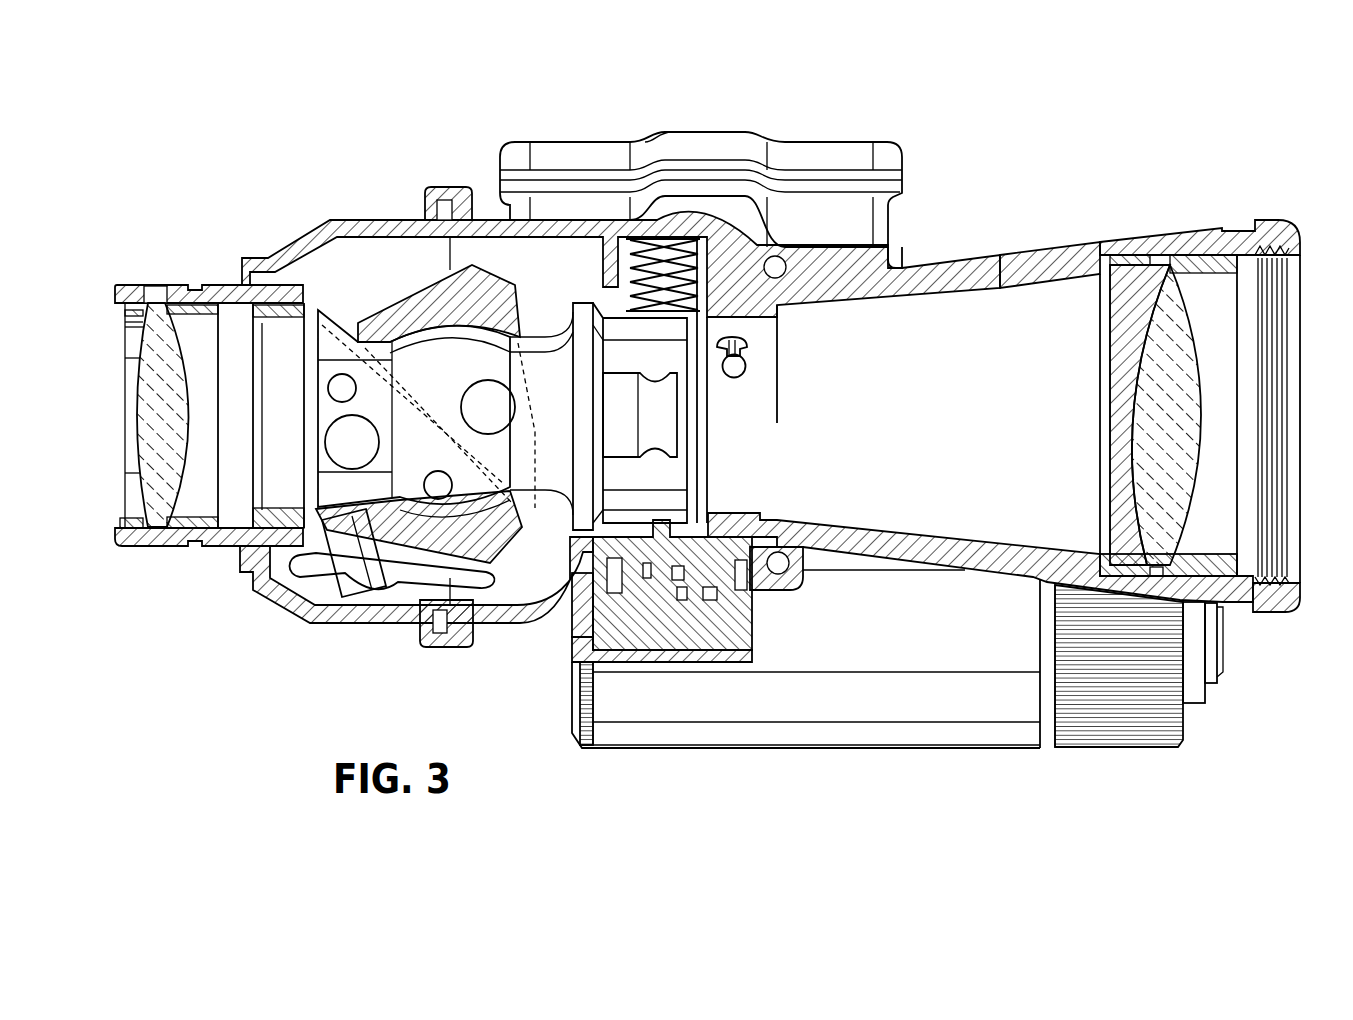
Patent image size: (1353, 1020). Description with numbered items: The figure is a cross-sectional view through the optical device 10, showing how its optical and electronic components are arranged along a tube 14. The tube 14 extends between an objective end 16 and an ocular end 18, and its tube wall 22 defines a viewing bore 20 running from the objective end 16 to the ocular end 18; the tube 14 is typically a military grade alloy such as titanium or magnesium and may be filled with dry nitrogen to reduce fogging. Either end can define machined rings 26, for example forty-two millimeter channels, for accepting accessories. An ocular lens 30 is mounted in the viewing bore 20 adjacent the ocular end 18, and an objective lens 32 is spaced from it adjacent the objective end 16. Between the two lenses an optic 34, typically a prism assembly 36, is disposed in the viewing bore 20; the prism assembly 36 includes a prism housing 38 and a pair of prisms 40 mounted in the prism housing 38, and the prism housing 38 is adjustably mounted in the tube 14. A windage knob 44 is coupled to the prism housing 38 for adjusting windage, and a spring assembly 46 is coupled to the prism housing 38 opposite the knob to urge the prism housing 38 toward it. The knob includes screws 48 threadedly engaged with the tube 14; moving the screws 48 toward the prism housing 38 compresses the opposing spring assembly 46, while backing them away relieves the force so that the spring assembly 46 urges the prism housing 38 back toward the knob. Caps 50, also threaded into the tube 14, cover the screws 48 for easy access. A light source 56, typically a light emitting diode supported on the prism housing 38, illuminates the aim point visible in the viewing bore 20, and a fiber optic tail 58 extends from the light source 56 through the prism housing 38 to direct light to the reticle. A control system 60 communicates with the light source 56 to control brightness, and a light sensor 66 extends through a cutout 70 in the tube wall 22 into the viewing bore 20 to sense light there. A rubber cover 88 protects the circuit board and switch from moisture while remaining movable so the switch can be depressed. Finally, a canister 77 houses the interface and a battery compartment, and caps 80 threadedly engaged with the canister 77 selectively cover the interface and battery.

The optical device 10 is at (962, 175).
The tube 14 is at (960, 270).
The objective end 16 is at (1275, 620).
The ocular end 18 is at (133, 570).
The viewing bore 20 is at (968, 500).
The tube wall 22 is at (1073, 260).
The machined rings 26 is at (143, 315).
The ocular lens 30 is at (157, 440).
The objective lens 32 is at (1210, 380).
The optic 34 is at (383, 302).
The prism assembly 36 is at (413, 376).
The prism housing 38 is at (328, 477).
The pair of prisms 40 is at (497, 285).
The windage knob 44 is at (724, 683).
The spring assembly 46 is at (683, 245).
The screws 48 is at (662, 632).
The caps 50 is at (757, 650).
The light source 56 is at (332, 596).
The fiber optic tail 58 is at (300, 565).
The control system 60 is at (845, 130).
The light sensor 66 is at (733, 372).
The cutout 70 is at (750, 343).
The canister 77 is at (862, 728).
The caps 80 is at (588, 742).
The cover 88 is at (703, 138).